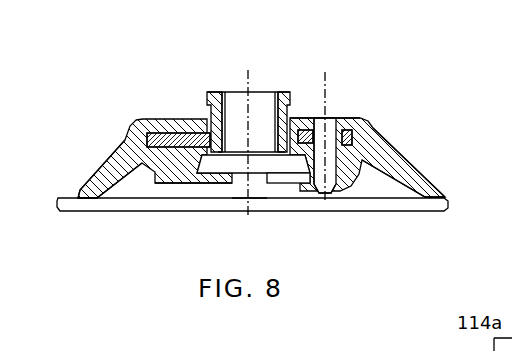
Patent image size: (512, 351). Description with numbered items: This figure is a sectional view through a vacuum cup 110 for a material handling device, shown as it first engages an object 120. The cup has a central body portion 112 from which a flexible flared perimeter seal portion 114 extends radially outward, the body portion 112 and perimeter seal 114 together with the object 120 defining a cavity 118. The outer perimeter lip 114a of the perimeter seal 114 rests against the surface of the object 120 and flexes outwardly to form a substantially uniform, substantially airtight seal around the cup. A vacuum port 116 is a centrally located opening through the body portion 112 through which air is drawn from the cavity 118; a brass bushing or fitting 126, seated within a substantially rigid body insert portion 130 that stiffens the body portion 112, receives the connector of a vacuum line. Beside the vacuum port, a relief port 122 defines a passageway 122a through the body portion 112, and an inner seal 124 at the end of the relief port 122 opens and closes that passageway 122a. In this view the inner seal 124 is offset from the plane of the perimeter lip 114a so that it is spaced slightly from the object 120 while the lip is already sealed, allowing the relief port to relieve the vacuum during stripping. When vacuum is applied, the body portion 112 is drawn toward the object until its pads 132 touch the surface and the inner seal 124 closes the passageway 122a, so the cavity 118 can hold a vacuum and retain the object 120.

The vacuum cup 110 is at (398, 110).
The body portion 112 is at (140, 117).
The perimeter seal portion 114 is at (97, 177).
The outer perimeter lip 114a is at (422, 193).
The vacuum port 116 is at (259, 90).
The cavity 118 is at (130, 194).
The object 120 is at (277, 205).
The relief port 122 is at (331, 100).
The passageway 122a is at (317, 128).
The inner seal 124 is at (340, 190).
The bushing 126 is at (222, 95).
The body insert portion 130 is at (205, 138).
The pads 132 is at (168, 186).